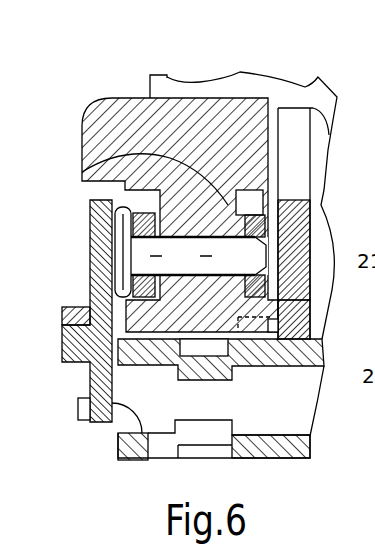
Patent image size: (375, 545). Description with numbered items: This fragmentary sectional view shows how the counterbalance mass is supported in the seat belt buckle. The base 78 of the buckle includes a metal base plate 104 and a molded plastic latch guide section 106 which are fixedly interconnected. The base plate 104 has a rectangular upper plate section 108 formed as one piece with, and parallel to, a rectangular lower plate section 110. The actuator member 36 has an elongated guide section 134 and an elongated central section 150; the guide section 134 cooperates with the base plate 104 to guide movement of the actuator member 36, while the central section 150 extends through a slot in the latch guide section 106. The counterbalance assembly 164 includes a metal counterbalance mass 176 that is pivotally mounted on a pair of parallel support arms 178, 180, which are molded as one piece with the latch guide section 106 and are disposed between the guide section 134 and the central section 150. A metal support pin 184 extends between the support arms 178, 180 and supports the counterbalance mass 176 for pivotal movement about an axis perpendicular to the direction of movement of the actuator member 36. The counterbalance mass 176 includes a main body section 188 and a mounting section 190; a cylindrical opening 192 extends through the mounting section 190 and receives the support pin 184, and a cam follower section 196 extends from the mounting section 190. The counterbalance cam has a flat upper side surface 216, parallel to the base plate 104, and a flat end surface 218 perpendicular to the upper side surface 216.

The counterbalance assembly 164 is at (80, 137).
The main body section 188 is at (163, 115).
The counterbalance mass 176 is at (225, 110).
The latch guide section 106 is at (317, 108).
The base 78 is at (326, 108).
The cylindrical opening 192 is at (230, 200).
The support arm 178 is at (250, 237).
The central section 150 is at (297, 262).
The upper side surface 216 is at (300, 302).
The upper plate section 108 is at (322, 366).
The cam follower section 196 is at (232, 318).
The flat end surface 218 is at (262, 338).
The lower plate section 110 is at (292, 450).
The base plate 104 is at (125, 462).
The actuator member 36 is at (78, 368).
The guide section 134 is at (58, 320).
The mounting section 190 is at (95, 160).
The support arm 180 is at (113, 215).
The support pin 184 is at (160, 248).